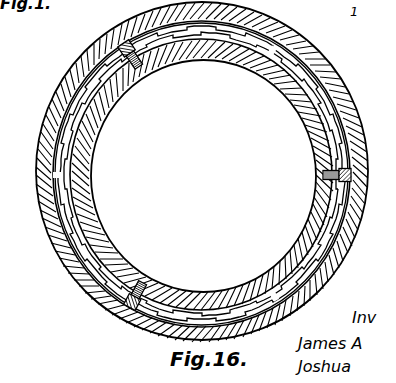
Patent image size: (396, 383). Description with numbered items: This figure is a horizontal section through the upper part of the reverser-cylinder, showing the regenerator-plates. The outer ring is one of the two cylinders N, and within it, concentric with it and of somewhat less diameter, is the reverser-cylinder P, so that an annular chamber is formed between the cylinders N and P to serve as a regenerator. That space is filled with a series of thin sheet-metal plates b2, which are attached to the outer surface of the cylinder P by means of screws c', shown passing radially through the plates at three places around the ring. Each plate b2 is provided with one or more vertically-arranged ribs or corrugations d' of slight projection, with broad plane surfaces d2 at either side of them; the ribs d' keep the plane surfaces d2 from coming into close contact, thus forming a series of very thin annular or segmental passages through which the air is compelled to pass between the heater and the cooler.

The cylinder N is at (202, 172).
The reverser-cylinder P is at (201, 174).
The thin sheet-metal plates b2 is at (80, 92).
The broad plane surfaces d2 is at (256, 36).
The vertically-arranged ribs or corrugations d' is at (222, 174).
The screws c' is at (247, 182).